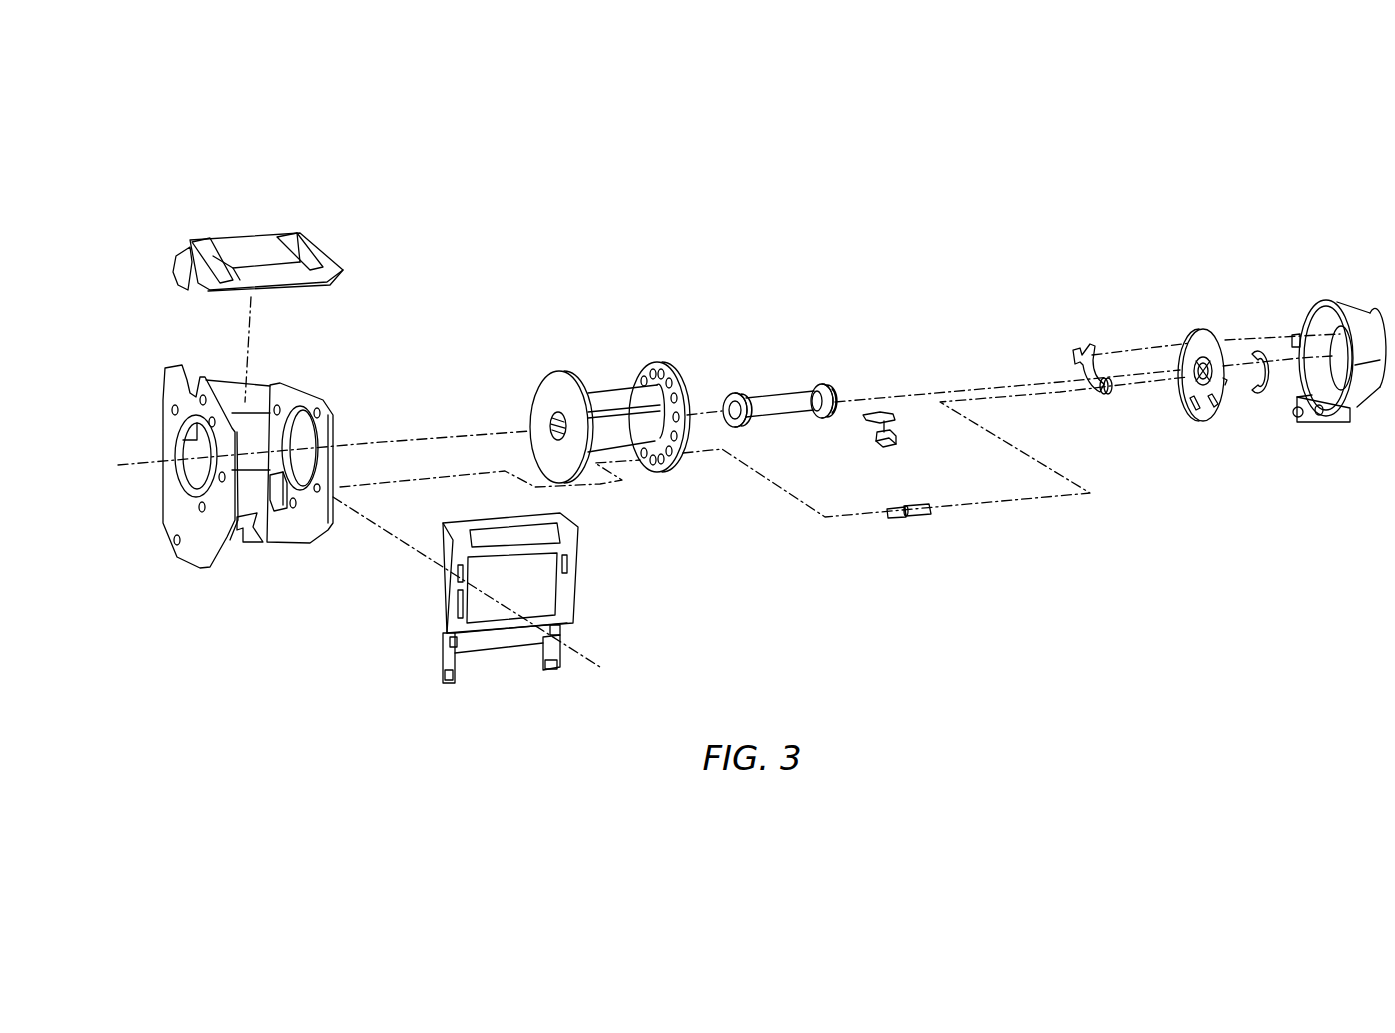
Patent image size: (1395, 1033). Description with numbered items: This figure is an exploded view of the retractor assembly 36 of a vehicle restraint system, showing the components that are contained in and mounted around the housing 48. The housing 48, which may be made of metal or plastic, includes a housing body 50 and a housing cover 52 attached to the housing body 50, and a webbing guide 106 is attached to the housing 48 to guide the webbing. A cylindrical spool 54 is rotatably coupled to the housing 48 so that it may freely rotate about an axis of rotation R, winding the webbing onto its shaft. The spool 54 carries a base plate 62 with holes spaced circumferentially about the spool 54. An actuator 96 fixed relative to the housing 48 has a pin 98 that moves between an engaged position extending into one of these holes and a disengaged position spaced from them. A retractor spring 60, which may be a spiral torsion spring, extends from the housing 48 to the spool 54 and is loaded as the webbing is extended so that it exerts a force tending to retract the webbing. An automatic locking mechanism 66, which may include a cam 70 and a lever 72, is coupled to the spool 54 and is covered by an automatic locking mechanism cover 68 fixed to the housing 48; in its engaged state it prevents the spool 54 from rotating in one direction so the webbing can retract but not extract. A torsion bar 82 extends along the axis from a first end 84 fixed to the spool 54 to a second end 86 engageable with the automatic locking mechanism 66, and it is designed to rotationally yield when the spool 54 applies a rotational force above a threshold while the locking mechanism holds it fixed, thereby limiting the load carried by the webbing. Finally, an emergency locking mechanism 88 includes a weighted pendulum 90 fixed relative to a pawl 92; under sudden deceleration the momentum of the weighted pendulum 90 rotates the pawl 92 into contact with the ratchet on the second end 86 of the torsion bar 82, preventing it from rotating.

The retractor assembly 36 is at (514, 194).
The webbing guide 106 is at (303, 243).
The housing 48 is at (158, 636).
The housing body 50 is at (210, 570).
The housing cover 52 is at (443, 638).
The spool 54 is at (610, 390).
The base plate 62 is at (653, 362).
The axis of rotation R is at (880, 397).
The torsion bar 82 is at (765, 398).
The first end 84 is at (738, 427).
The second end 86 is at (817, 420).
The emergency locking mechanism 88 is at (813, 472).
The weighted pendulum 90 is at (896, 441).
The pawl 92 is at (891, 414).
The actuator 96 is at (918, 518).
The pin 98 is at (898, 517).
The automatic locking mechanism 66 is at (1167, 444).
The lever 72 is at (1080, 348).
The cam 70 is at (1203, 327).
The retractor spring 60 is at (1260, 348).
The automatic locking mechanism cover 68 is at (1347, 302).